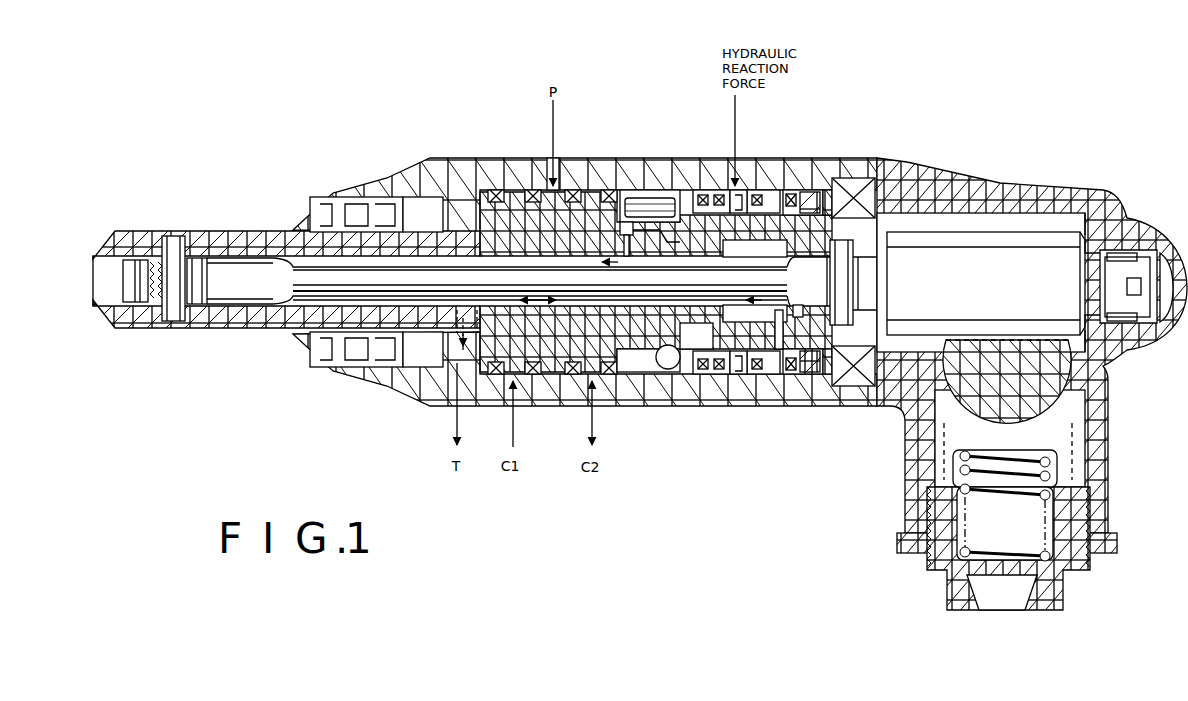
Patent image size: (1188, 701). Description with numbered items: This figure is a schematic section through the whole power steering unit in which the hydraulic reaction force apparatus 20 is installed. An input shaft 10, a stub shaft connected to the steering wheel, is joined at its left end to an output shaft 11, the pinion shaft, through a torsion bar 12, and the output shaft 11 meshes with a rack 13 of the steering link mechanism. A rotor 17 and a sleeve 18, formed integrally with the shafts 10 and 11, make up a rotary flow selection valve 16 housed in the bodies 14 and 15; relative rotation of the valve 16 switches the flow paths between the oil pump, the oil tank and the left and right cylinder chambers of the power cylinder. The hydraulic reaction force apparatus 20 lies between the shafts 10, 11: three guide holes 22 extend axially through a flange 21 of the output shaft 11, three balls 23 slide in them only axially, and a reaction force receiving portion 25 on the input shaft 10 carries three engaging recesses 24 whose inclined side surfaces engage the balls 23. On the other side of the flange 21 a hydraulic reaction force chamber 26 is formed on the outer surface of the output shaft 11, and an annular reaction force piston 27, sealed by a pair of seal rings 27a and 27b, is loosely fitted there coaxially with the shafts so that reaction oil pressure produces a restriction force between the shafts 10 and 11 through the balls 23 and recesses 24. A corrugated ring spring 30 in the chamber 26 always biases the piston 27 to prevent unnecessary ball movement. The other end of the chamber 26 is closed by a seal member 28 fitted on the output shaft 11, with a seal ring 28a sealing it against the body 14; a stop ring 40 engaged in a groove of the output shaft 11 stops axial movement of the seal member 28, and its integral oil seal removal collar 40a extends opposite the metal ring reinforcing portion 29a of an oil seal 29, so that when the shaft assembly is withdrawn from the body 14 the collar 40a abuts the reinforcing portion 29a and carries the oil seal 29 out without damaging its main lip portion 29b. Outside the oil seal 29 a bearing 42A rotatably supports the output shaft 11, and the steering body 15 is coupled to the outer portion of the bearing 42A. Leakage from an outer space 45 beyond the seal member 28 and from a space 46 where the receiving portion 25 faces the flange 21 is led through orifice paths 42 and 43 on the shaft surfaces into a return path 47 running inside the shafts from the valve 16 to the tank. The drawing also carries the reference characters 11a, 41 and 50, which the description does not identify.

The input shaft 10 is at (255, 248).
The output shaft 11 is at (815, 237).
The cylinder tube 11a is at (1050, 240).
The torsion bar 12 is at (318, 328).
The rack 13 is at (1047, 378).
The body 14 is at (423, 173).
The body 15 is at (1004, 197).
The rotary flow selection valve 16 is at (527, 127).
The rotor 17 is at (463, 243).
The sleeve 18 is at (507, 200).
The hydraulic reaction force apparatus 20 is at (683, 382).
The flange 21 is at (673, 381).
The guide holes 22 is at (675, 374).
The balls 23 is at (663, 380).
The engaging recesses 24 is at (657, 380).
The reaction force receiving portion 25 is at (632, 380).
The hydraulic reaction force chamber 26 is at (740, 381).
The reaction force piston 27 is at (712, 382).
The seal ring 27a is at (708, 195).
The seal ring 27b is at (697, 190).
The seal member 28 is at (768, 382).
The seal ring 28a is at (768, 193).
The oil seal 29 is at (823, 382).
The metal ring reinforcing portion 29a is at (813, 192).
The main lip portion 29b is at (790, 312).
The corrugated ring spring 30 is at (733, 382).
The stop ring 40 is at (778, 192).
The oil seal removal collar 40a is at (790, 194).
The thrust disc 41 is at (766, 222).
The orifice path 42 is at (777, 328).
The bearing 42A is at (860, 182).
The orifice path 43 is at (648, 215).
The outer space 45 is at (803, 382).
The space 46 is at (632, 195).
The return path 47 is at (740, 307).
The ball 50 is at (672, 366).